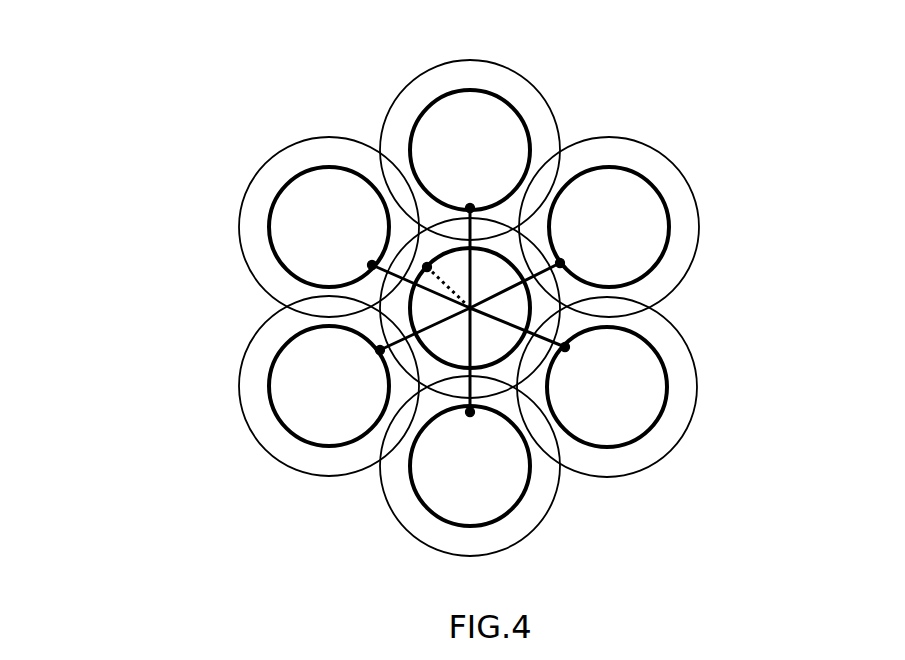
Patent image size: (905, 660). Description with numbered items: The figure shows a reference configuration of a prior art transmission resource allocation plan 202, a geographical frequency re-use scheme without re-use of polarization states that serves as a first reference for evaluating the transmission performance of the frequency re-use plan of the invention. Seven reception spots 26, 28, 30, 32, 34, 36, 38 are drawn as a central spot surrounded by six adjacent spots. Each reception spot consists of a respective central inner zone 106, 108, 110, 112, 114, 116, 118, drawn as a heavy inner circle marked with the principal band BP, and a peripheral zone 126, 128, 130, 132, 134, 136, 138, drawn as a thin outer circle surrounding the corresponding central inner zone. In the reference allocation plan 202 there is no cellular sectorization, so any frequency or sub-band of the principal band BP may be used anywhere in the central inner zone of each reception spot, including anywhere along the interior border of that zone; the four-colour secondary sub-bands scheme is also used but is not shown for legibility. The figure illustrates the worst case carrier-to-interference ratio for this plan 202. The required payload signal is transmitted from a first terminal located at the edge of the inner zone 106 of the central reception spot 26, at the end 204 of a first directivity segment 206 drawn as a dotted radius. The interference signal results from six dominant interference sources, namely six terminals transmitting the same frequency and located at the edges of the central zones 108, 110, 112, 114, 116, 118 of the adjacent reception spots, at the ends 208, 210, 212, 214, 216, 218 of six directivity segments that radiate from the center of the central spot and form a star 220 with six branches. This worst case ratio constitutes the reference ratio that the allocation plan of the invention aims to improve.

The reference transmission resource allocation plan 202 is at (138, 141).
The reception spot 26 is at (507, 363).
The reception spot 28 is at (272, 432).
The reception spot 30 is at (260, 253).
The reception spot 32 is at (433, 83).
The reception spot 34 is at (637, 157).
The reception spot 36 is at (640, 457).
The reception spot 38 is at (410, 517).
The central inner zone 106 is at (507, 309).
The central inner zone 108 is at (295, 382).
The central inner zone 110 is at (293, 220).
The central inner zone 112 is at (474, 110).
The central inner zone 114 is at (648, 233).
The central inner zone 116 is at (642, 408).
The central inner zone 118 is at (493, 487).
The peripheral zone 126 is at (445, 245).
The peripheral zone 128 is at (322, 463).
The peripheral zone 130 is at (277, 167).
The peripheral zone 132 is at (520, 90).
The peripheral zone 134 is at (670, 180).
The peripheral zone 136 is at (683, 373).
The peripheral zone 138 is at (453, 543).
The end of first directivity segment 204 is at (427, 266).
The first directivity segment 206 is at (447, 285).
The end of directivity segment 208 is at (380, 350).
The end of directivity segment 210 is at (372, 265).
The end of directivity segment 212 is at (470, 207).
The end of directivity segment 214 is at (560, 263).
The end of directivity segment 216 is at (565, 347).
The end of directivity segment 218 is at (470, 413).
The star with six branches 220 is at (430, 323).